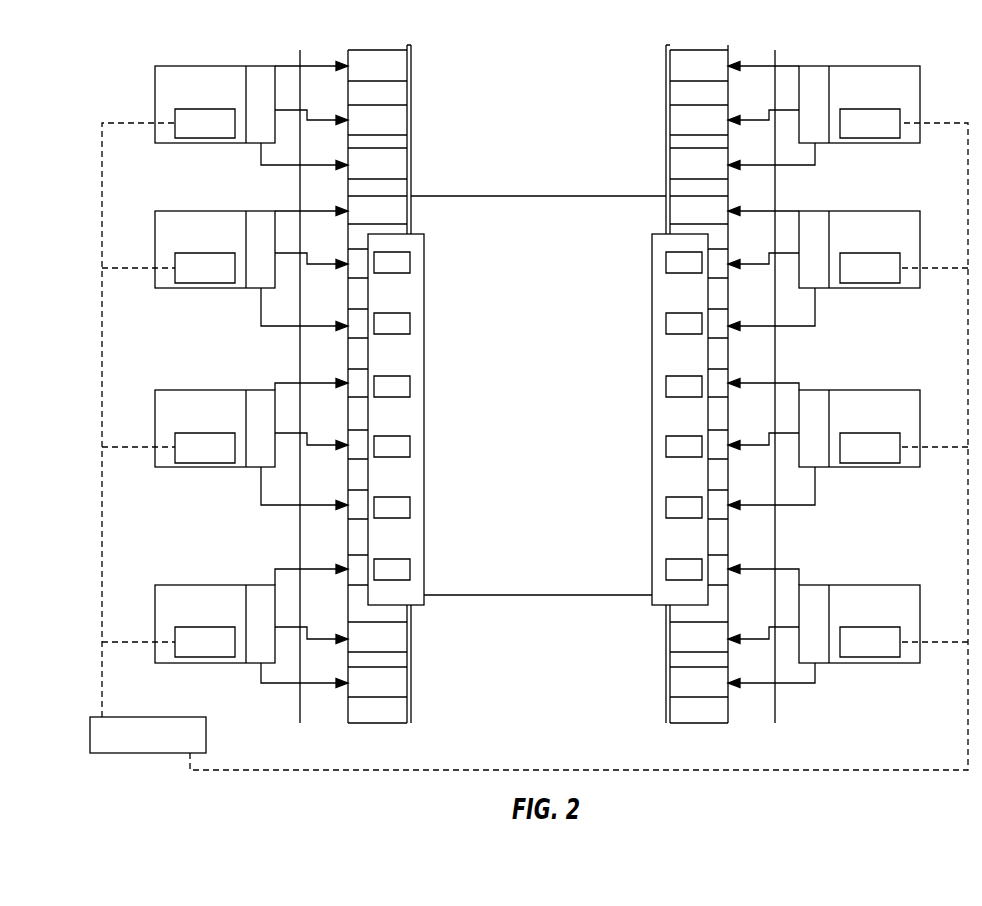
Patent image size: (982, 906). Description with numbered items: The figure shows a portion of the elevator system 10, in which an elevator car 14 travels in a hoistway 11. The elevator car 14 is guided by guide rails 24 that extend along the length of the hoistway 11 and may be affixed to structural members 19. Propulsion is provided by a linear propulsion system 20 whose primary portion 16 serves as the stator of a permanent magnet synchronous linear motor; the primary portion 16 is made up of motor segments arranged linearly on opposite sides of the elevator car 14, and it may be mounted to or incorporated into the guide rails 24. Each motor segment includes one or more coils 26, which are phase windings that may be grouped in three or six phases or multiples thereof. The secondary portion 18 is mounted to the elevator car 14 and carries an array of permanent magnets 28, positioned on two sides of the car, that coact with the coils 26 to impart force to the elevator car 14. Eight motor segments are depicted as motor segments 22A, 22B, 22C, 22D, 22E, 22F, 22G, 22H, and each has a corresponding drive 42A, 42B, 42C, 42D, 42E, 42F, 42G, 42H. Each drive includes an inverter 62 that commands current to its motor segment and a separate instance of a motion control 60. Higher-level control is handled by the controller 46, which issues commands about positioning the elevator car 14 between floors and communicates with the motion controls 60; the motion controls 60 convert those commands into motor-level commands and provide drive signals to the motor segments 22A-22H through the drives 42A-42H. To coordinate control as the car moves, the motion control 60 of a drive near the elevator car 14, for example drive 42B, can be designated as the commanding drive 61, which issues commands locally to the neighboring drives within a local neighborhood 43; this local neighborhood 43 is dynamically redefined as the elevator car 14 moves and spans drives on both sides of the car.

The elevator system 10 is at (556, 38).
The hoistway 11 is at (565, 68).
The elevator car 14 is at (519, 267).
The primary portion 16 is at (390, 662).
The secondary portion 18 is at (424, 515).
The structural members 19 is at (330, 717).
The linear propulsion system 20 is at (420, 180).
The guide rails 24 is at (411, 58).
The coils 26 is at (398, 110).
The permanent magnets 28 is at (405, 326).
The drive 42A is at (155, 640).
The drive 42B is at (155, 445).
The drive 42C is at (155, 266).
The drive 42D is at (155, 101).
The drive 42E is at (920, 640).
The drive 42F is at (920, 447).
The drive 42G is at (920, 266).
The drive 42H is at (920, 104).
The motor segment 22A is at (338, 704).
The motor segment 22B is at (338, 524).
The motor segment 22C is at (338, 344).
The motor segment 22D is at (338, 174).
The motor segment 22E is at (740, 702).
The motor segment 22F is at (740, 527).
The motor segment 22G is at (740, 347).
The motor segment 22H is at (740, 176).
The motion control 60 is at (212, 140).
The inverter 62 is at (261, 66).
The commanding drive 61 is at (174, 490).
The local neighborhood 43 is at (187, 550).
The controller 46 is at (207, 727).